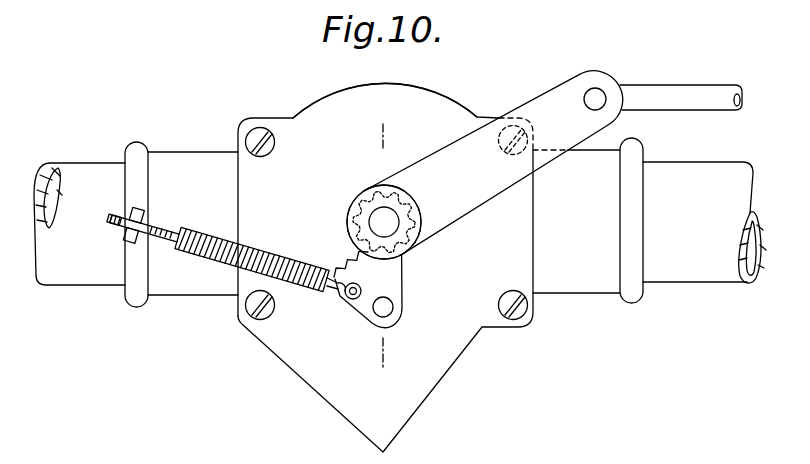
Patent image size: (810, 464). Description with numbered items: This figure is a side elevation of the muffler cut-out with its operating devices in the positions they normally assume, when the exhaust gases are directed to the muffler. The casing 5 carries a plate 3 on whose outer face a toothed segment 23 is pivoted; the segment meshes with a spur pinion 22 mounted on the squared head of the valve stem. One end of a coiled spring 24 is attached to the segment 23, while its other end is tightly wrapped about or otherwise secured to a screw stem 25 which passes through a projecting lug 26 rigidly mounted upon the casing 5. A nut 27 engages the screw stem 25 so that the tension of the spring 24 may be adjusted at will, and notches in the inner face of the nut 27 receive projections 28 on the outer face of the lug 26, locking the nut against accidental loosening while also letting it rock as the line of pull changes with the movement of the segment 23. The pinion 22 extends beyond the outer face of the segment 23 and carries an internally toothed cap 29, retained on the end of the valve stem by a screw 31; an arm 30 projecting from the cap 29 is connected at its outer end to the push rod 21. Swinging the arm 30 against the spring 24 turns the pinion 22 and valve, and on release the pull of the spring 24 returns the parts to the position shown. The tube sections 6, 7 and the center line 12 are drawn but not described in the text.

The plate 3 is at (385, 267).
The casing 5 is at (311, 109).
The tube section 6 is at (649, 220).
The tube section 7 is at (136, 224).
The center line 12 is at (383, 248).
The push rod 21 is at (681, 97).
The spur pinion 22 is at (421, 213).
The segment 23 is at (368, 289).
The coiled spring 24 is at (273, 257).
The screw stem 25 is at (158, 230).
The lug 26 is at (143, 211).
The nut 27 is at (120, 231).
The projections 28 is at (137, 232).
The cap 29 is at (348, 210).
The arm 30 is at (493, 163).
The screw 31 is at (384, 222).